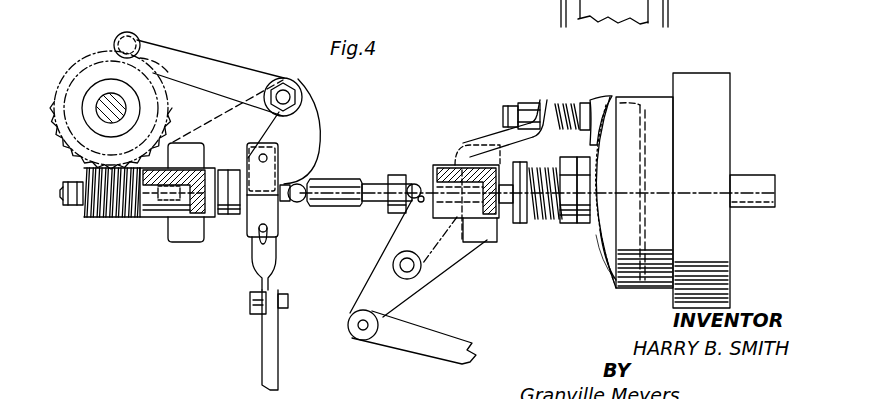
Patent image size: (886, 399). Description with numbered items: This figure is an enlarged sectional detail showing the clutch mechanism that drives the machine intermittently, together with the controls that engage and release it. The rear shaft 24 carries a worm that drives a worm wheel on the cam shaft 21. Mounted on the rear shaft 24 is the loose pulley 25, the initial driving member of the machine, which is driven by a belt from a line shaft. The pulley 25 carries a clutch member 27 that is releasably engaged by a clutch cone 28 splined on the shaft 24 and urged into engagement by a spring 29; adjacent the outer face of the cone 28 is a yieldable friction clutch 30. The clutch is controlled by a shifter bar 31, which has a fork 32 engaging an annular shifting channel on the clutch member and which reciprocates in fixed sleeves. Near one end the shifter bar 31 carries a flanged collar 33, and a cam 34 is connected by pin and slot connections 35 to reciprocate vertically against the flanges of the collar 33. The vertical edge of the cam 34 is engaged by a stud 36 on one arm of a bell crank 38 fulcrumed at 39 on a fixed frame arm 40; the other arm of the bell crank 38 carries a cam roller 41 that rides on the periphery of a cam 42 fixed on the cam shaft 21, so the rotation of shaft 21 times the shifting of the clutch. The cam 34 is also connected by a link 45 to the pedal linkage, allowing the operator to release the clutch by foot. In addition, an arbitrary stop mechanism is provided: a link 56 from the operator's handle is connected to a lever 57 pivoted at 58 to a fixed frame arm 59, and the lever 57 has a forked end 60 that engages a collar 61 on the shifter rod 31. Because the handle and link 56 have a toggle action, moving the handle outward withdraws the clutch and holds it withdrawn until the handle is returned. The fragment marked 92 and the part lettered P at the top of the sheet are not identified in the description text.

The cam shaft 21 is at (98, 120).
The rear shaft 24 is at (343, 208).
The loose pulley 25 is at (720, 95).
The clutch member 27 is at (634, 98).
The clutch cone 28 is at (615, 280).
The spring 29 is at (548, 223).
The friction clutch 30 is at (604, 100).
The shifter bar 31 is at (373, 185).
The fork 32 is at (580, 223).
The flanged collar 33 is at (262, 205).
The cam 34 is at (283, 160).
The pin and slot connections 35 is at (262, 242).
The stud 36 is at (297, 204).
The bell crank 38 is at (226, 63).
The fulcrum 39 is at (287, 90).
The fixed frame arm 40 is at (206, 180).
The cam roller 41 is at (130, 33).
The cam 42 is at (147, 80).
The link 45 is at (279, 360).
The link 56 is at (472, 346).
The lever 57 is at (387, 303).
The pivot 58 is at (405, 266).
The fixed frame arm 59 is at (428, 266).
The forked end 60 is at (417, 185).
The collar 61 is at (410, 205).
The bracket 92 is at (560, 14).
The panel P is at (592, 20).